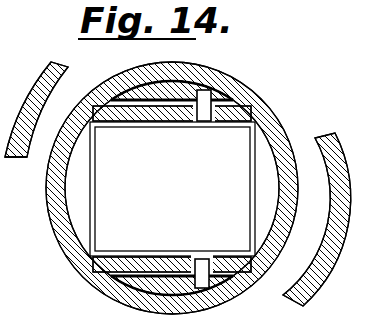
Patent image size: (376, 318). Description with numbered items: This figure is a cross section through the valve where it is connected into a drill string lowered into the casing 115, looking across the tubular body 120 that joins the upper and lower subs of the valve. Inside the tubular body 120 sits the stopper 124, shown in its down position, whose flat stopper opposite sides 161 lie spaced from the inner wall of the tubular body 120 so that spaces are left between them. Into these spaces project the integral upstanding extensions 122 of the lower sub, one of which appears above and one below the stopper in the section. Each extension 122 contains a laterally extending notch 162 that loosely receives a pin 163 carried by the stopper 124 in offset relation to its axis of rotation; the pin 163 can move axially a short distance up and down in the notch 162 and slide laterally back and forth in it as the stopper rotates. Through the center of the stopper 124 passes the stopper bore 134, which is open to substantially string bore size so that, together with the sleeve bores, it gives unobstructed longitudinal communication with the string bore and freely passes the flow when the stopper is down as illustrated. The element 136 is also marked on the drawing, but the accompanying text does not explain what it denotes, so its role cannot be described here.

The outer shield band segment 115 is at (46, 78).
The shield band end 136 is at (37, 156).
The cylindrical housing ring 120 is at (64, 231).
The upper arcuate filler segment 122 is at (139, 93).
The arcuate liner 162 is at (235, 89).
The upper fastener 163 is at (203, 116).
The rectangular frame 124 is at (118, 124).
The lower plate 134 is at (112, 246).
The lower fastener plate 161 is at (162, 276).